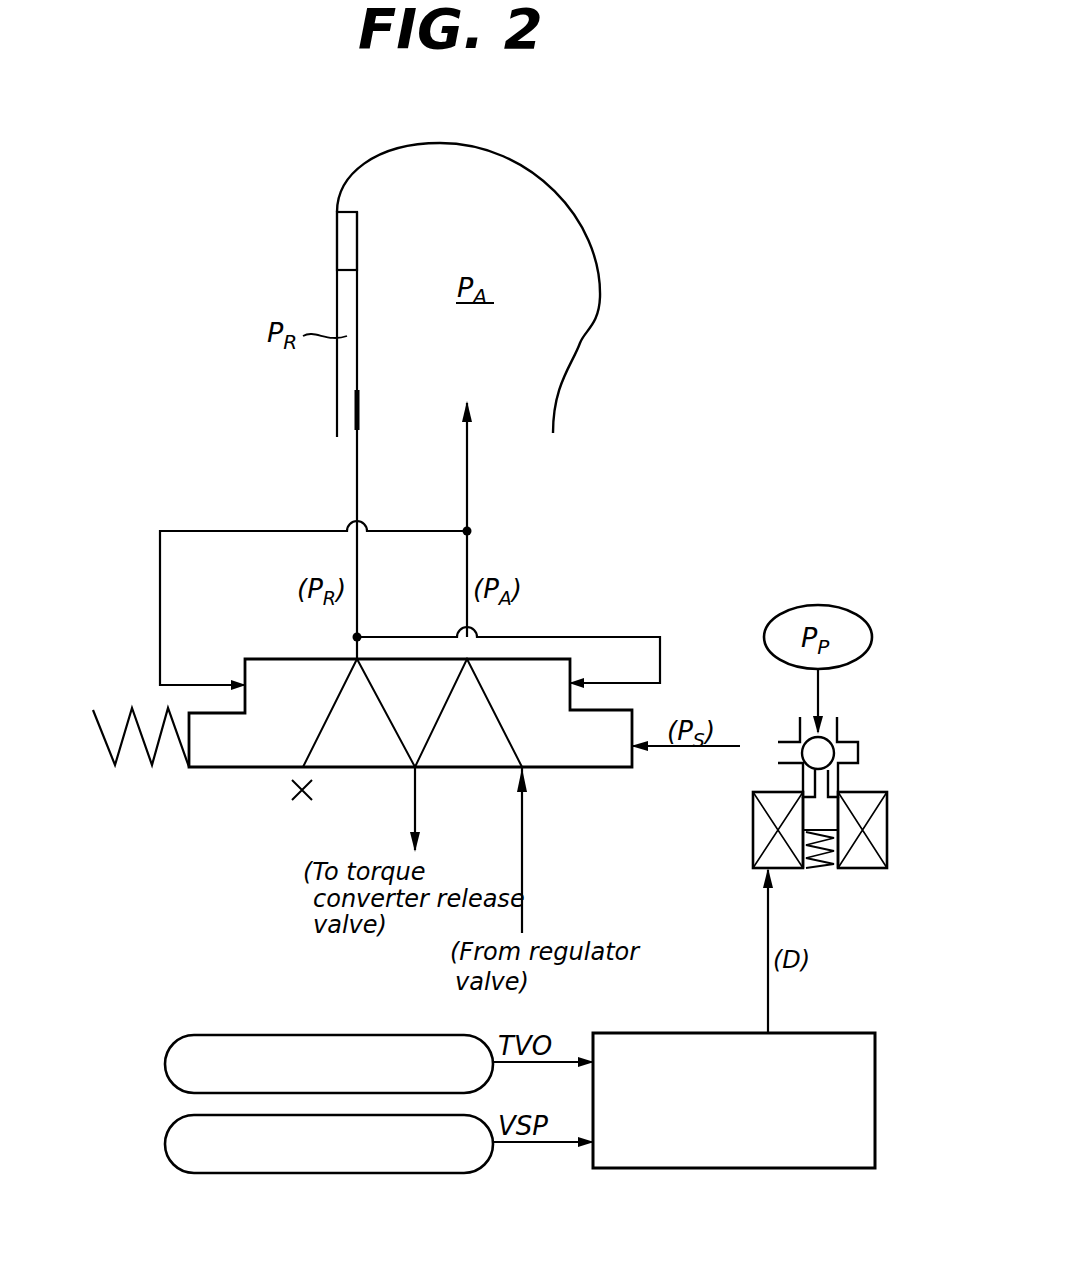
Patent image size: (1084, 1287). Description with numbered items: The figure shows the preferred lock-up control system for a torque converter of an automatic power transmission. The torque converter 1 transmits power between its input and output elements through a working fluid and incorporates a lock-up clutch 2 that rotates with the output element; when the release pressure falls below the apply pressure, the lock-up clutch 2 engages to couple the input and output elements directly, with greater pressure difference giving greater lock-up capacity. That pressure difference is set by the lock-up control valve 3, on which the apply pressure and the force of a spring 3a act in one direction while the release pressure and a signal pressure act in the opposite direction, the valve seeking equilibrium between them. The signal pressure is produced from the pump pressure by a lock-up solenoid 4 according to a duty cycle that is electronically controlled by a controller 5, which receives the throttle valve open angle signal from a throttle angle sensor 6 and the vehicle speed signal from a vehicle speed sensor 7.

The torque converter 1 is at (587, 228).
The lock-up clutch 2 is at (357, 276).
The lock-up control valve 3 is at (223, 767).
The spring 3a is at (108, 750).
The lock-up solenoid 4 is at (868, 868).
The controller 5 is at (875, 1093).
The throttle angle sensor 6 is at (165, 1062).
The vehicle speed sensor 7 is at (165, 1142).